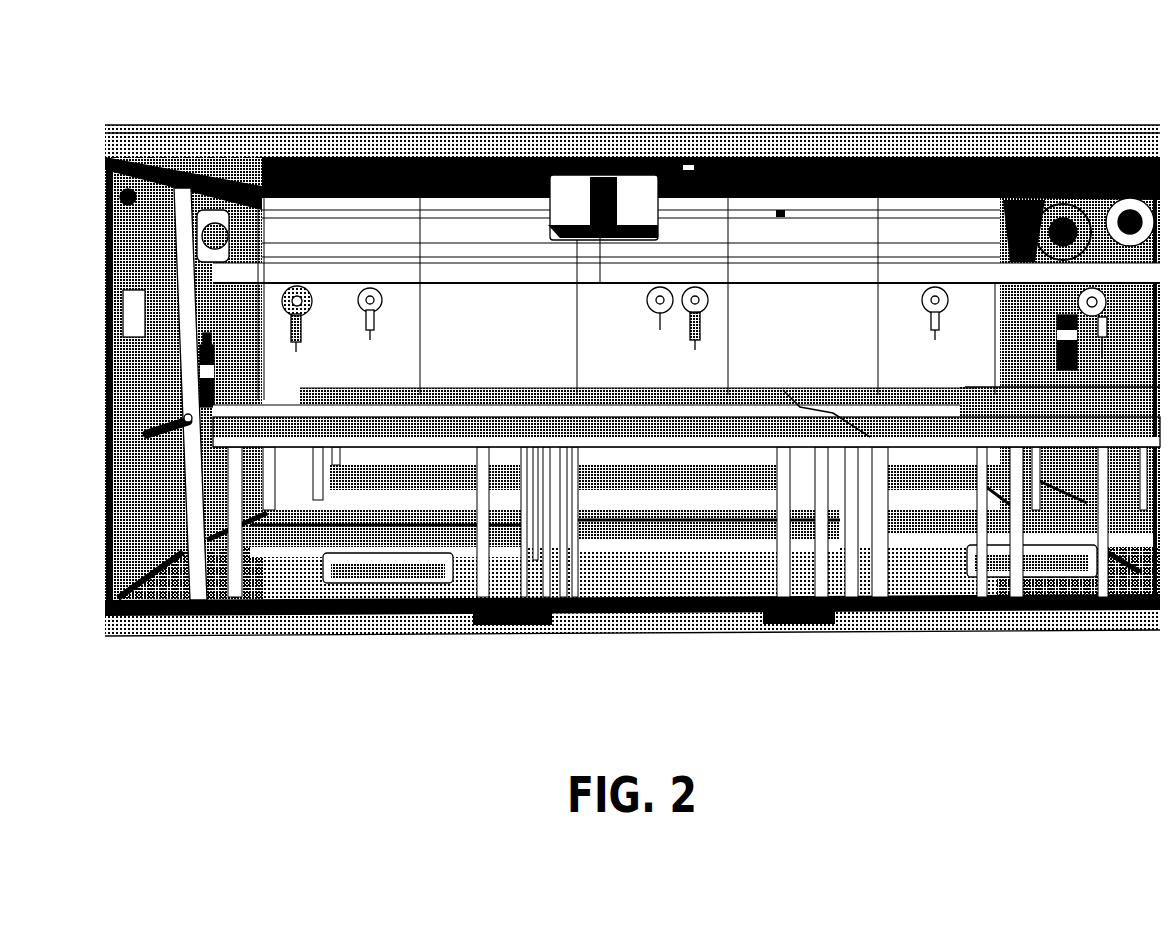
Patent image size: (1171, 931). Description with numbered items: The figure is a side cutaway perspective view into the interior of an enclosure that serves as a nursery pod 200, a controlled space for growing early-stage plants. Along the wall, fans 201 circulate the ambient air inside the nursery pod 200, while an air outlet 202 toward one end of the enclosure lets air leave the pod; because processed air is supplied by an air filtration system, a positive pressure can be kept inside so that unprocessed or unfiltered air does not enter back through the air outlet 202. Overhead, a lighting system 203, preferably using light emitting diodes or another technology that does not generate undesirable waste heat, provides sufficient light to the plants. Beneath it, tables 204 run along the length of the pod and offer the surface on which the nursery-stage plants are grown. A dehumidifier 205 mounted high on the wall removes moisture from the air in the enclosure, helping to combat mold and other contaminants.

The nursery pod 200 is at (500, 133).
The fans 201 is at (297, 285).
The air outlet 202 is at (1097, 210).
The lighting system 203 is at (737, 272).
The tables 204 is at (428, 428).
The dehumidifier 205 is at (638, 183).